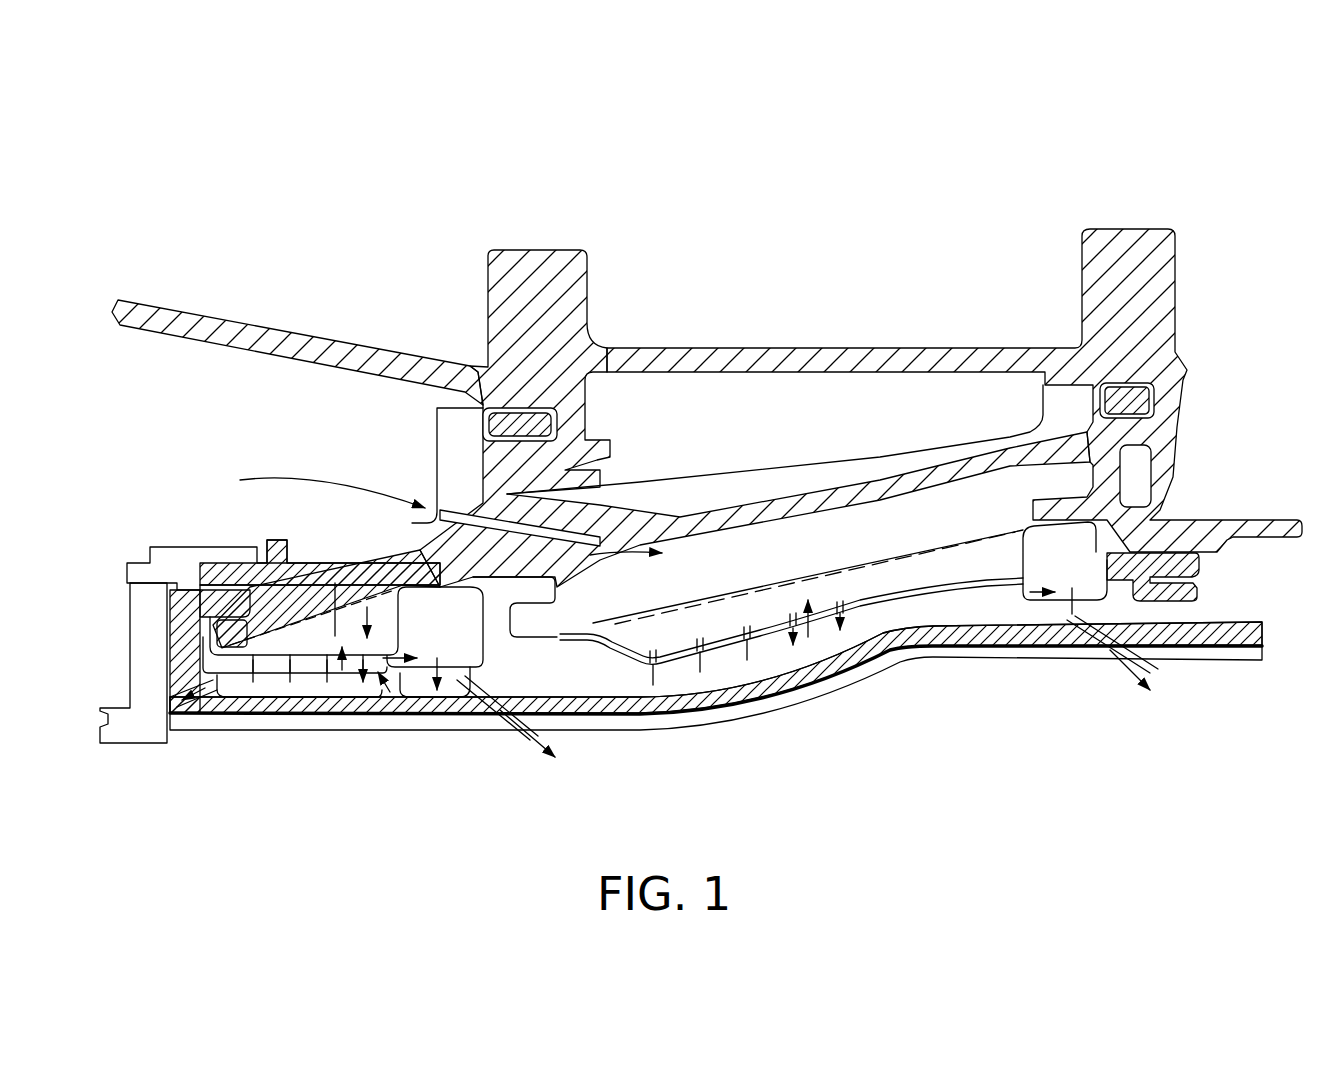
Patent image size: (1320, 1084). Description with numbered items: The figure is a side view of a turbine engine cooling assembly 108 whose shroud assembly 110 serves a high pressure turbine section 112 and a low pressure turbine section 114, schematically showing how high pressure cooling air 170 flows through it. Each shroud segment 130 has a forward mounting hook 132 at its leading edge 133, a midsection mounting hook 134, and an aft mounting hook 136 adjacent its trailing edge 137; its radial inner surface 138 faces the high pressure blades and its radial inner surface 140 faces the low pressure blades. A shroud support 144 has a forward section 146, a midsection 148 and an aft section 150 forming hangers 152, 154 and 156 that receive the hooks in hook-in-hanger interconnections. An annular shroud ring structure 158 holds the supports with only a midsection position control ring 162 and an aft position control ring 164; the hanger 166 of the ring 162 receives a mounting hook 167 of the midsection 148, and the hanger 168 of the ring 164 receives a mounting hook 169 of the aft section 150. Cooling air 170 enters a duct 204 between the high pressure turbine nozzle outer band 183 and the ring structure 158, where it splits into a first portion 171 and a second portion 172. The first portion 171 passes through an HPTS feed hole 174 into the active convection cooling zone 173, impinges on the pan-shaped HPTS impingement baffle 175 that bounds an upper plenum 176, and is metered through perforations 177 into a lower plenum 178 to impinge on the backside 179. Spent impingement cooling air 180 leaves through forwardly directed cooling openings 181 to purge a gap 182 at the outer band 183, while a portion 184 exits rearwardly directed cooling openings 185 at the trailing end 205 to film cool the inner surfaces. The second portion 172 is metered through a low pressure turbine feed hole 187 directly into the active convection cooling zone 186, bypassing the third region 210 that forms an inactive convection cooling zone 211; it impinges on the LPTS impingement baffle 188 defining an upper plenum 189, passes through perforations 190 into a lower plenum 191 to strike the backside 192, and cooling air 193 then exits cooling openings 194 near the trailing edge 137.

The shroud assembly 110 is at (228, 200).
The turbine engine cooling assembly 108 is at (556, 213).
The high pressure turbine section 112 is at (255, 382).
The low pressure turbine section 114 is at (985, 380).
The midsection position control ring 162 is at (580, 296).
The aft position control ring 164 is at (1170, 278).
The shroud ring structure 158 is at (908, 340).
The inactive convection cooling zone 211 is at (700, 395).
The third region 210 is at (775, 439).
The duct 204 is at (170, 385).
The mounting hook 167 is at (518, 426).
The hanger 166 is at (470, 450).
The mounting hook 169 is at (1135, 390).
The hanger 168 is at (1160, 440).
The aft section 150 is at (1163, 518).
The shroud support 144 is at (820, 488).
The low pressure turbine feed hole 187 is at (600, 500).
The midsection mounting hook 134 is at (578, 588).
The low pressure turbine section active convection cooling zone 186 is at (808, 571).
The hanger 154 is at (520, 625).
The midsection 148 is at (490, 596).
The LPTS impingement baffle 188 is at (990, 640).
The lower LPTS plenum 191 is at (868, 648).
The backside 192 is at (767, 655).
The upper LPTS plenum 189 is at (820, 665).
The perforations 190 is at (715, 670).
The aft mounting hook 136 is at (1195, 572).
The hanger 156 is at (1185, 592).
The shroud segment 130 is at (940, 660).
The radial inner surface 140 is at (1212, 662).
The radial inner surface 138 is at (280, 712).
The trailing edge 137 is at (1050, 715).
The trailing end 205 is at (505, 765).
The forward mounting hook 132 is at (238, 590).
The hanger 152 is at (220, 570).
The high pressure turbine nozzle outer band 183 is at (152, 740).
The leading edge 133 is at (175, 795).
The forward section 146 is at (272, 580).
The HPTS feed hole 174 is at (330, 590).
The high pressure cooling air 170 is at (250, 475).
The second portion 172 is at (358, 482).
The first portion 171 is at (330, 512).
The high pressure turbine section active convection cooling zone 173 is at (336, 585).
The HPTS impingement baffle 175 is at (398, 625).
The perforations 177 is at (270, 680).
The upper HPTS plenum 176 is at (375, 690).
The lower HPTS plenum 178 is at (420, 700).
The backside 179 is at (310, 670).
The spent impingement cooling air 180 is at (190, 713).
The cooling openings 181 is at (215, 700).
The gap 182 is at (180, 765).
The portion of high pressure cooling air 184 is at (530, 740).
The cooling openings 185 is at (520, 723).
The cooling openings 194 is at (1150, 678).
The cooling air 193 is at (1120, 665).